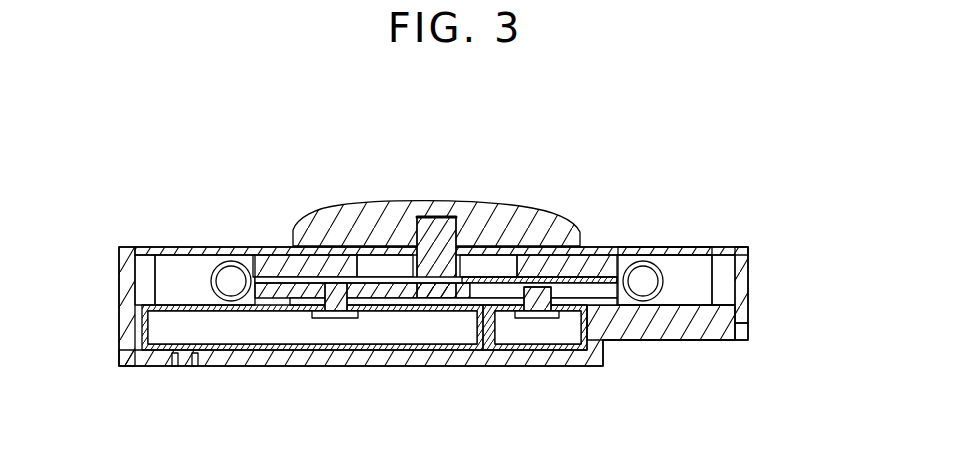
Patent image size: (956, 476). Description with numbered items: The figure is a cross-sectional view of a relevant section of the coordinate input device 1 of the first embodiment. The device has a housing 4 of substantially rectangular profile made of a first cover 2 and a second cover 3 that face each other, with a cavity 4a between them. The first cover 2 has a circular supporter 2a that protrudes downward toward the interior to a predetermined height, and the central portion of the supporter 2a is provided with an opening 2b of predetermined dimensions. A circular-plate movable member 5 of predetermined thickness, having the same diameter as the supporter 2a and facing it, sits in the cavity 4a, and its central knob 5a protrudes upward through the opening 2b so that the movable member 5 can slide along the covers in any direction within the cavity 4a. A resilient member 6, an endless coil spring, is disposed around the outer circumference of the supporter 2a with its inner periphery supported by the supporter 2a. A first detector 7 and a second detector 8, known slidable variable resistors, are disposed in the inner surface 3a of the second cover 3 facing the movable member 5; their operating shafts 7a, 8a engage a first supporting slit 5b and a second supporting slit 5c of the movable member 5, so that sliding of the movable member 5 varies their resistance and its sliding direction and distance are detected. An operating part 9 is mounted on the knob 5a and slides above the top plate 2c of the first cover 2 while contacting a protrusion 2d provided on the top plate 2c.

The coordinate input device 1 is at (178, 222).
The first cover 2 is at (726, 238).
The supporter 2a is at (275, 254).
The opening 2b is at (497, 270).
The top plate 2c is at (654, 251).
The protrusion 2d is at (330, 272).
The second cover 3 is at (648, 350).
The inner surface 3a is at (679, 291).
The housing 4 is at (762, 277).
The cavity 4a is at (690, 273).
The movable member 5 is at (379, 278).
The knob 5a is at (440, 232).
The first supporting slit 5b is at (308, 280).
The second supporting slit 5c is at (584, 290).
The resilient member 6 is at (236, 274).
The first detector 7 is at (401, 338).
The operating shaft 7a is at (328, 320).
The second detector 8 is at (529, 338).
The operating shaft 8a is at (548, 283).
The operating part 9 is at (395, 208).